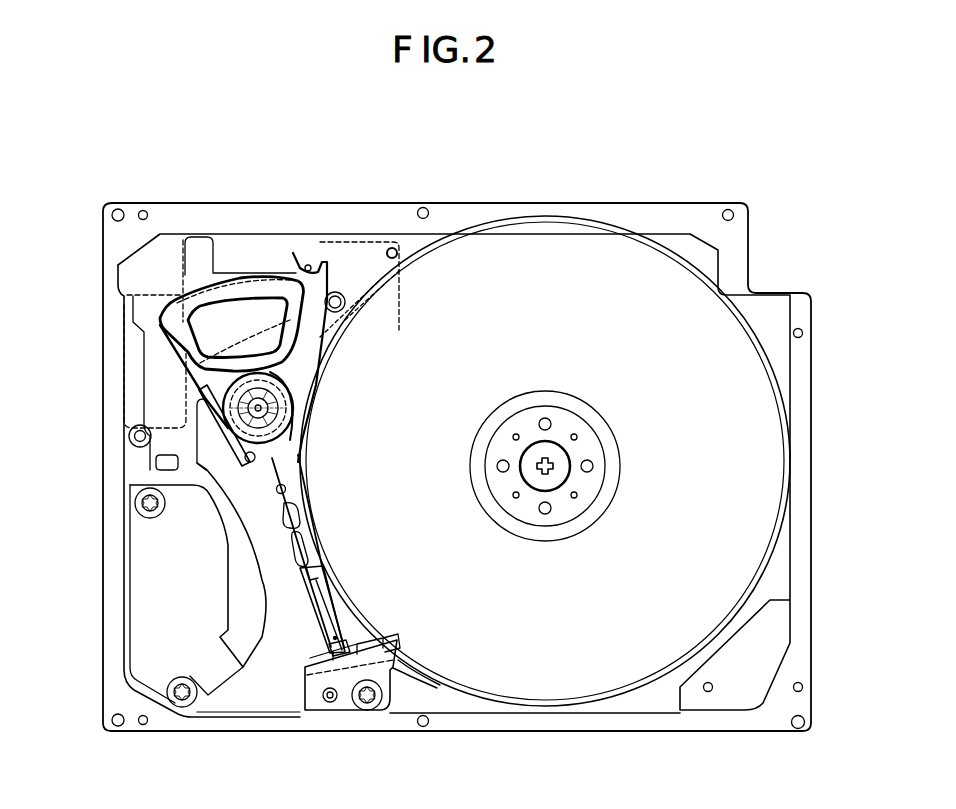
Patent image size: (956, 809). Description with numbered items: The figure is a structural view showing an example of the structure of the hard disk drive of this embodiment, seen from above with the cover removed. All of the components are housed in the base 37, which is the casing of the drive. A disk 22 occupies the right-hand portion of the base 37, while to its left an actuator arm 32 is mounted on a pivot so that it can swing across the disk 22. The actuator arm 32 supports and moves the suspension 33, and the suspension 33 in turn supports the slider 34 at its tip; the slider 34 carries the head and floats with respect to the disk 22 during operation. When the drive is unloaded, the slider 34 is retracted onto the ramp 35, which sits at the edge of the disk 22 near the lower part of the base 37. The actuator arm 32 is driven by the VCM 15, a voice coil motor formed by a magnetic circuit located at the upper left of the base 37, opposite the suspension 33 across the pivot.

The VCM 15 is at (154, 322).
The disk 22 is at (592, 322).
The actuator arm 32 is at (258, 512).
The suspension 33 is at (300, 608).
The slider 34 is at (342, 616).
The ramp 35 is at (284, 688).
The base 37 is at (530, 206).